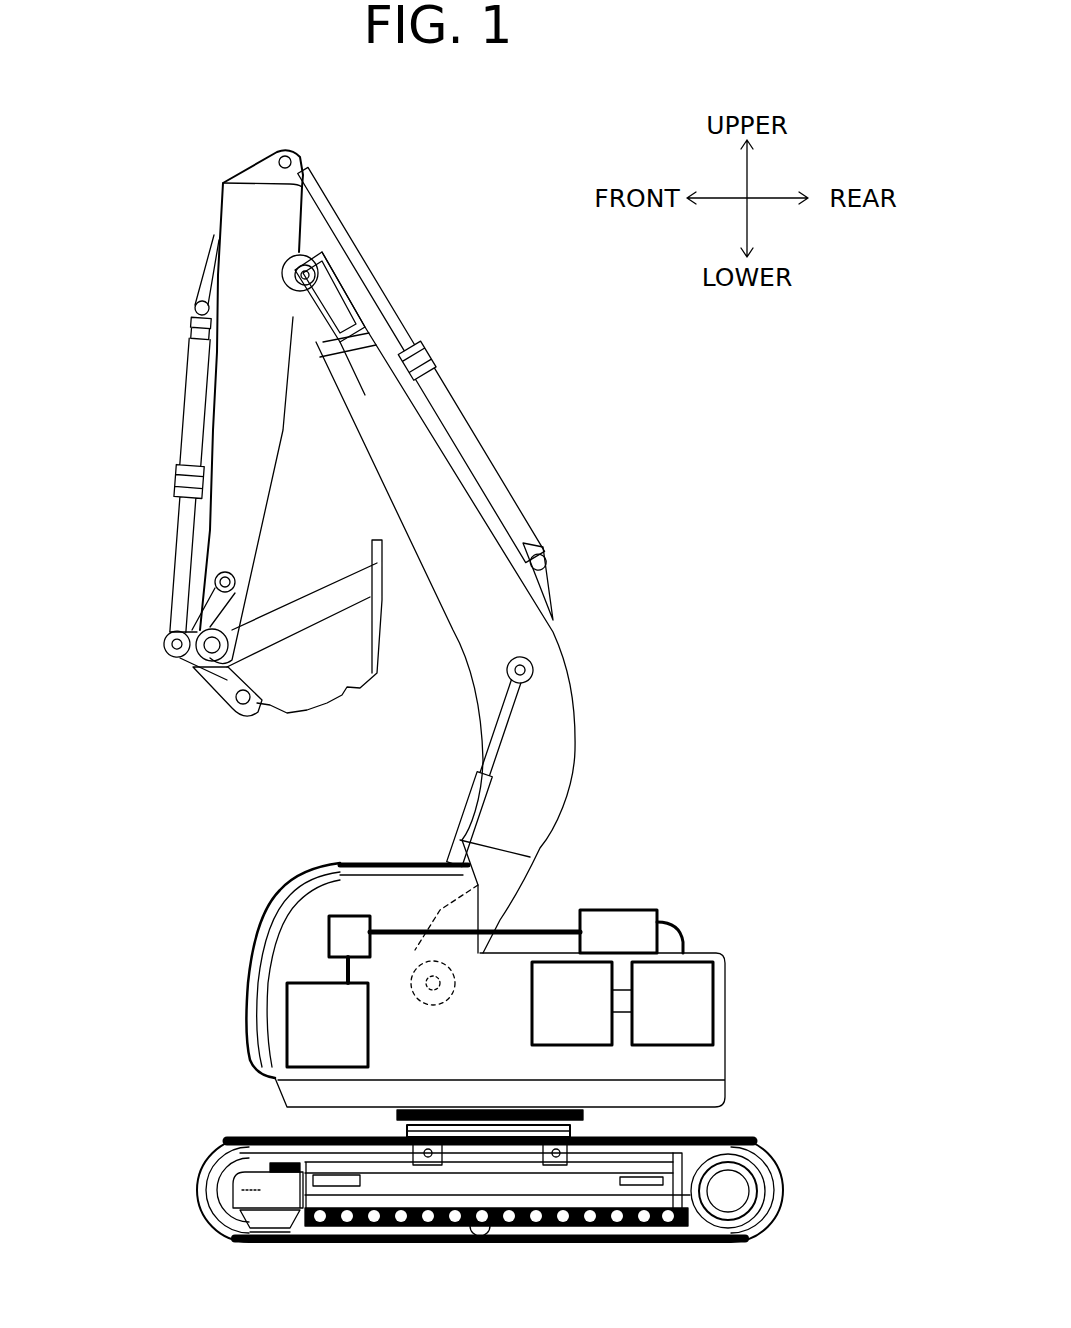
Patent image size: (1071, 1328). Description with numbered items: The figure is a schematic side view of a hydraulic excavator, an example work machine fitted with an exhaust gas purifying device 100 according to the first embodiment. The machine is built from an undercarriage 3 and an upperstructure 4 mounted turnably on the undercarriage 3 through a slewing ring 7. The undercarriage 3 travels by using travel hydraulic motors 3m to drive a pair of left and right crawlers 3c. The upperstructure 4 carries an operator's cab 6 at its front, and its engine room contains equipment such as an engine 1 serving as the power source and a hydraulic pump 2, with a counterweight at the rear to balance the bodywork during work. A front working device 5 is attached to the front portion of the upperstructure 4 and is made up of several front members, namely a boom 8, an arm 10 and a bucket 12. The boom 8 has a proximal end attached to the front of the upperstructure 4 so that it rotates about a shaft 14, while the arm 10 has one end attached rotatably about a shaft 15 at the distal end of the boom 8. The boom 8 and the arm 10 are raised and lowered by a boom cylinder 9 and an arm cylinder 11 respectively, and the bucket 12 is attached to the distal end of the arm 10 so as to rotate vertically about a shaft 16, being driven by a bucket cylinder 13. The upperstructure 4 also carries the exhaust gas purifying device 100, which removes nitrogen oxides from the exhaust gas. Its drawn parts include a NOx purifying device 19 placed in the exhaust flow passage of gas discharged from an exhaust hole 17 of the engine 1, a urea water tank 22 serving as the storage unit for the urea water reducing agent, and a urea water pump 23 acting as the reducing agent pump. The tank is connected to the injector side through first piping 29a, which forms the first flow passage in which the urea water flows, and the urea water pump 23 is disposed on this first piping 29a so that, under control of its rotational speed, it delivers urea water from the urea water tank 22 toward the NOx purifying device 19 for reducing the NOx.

The engine 1 is at (687, 1008).
The hydraulic pump 2 is at (558, 1010).
The undercarriage 3 is at (102, 1132).
The crawlers 3c is at (230, 1142).
The travel hydraulic motors 3m is at (747, 1160).
The upperstructure 4 is at (100, 888).
The front working device 5 is at (94, 193).
The cab 6 is at (302, 940).
The slewing ring 7 is at (497, 1113).
The boom 8 is at (553, 712).
The boom cylinder 9 is at (477, 778).
The arm 10 is at (228, 225).
The arm cylinder 11 is at (442, 388).
The bucket 12 is at (327, 687).
The bucket cylinder 13 is at (185, 395).
The shaft 14 is at (420, 992).
The shaft 15 is at (313, 267).
The shaft 16 is at (210, 663).
The exhaust hole 17 is at (687, 940).
The NOx purifying device 19 is at (603, 915).
The urea water tank 22 is at (305, 1020).
The urea water pump 23 is at (300, 920).
The first piping 29a is at (432, 912).
The exhaust gas purifying device 100 is at (357, 864).